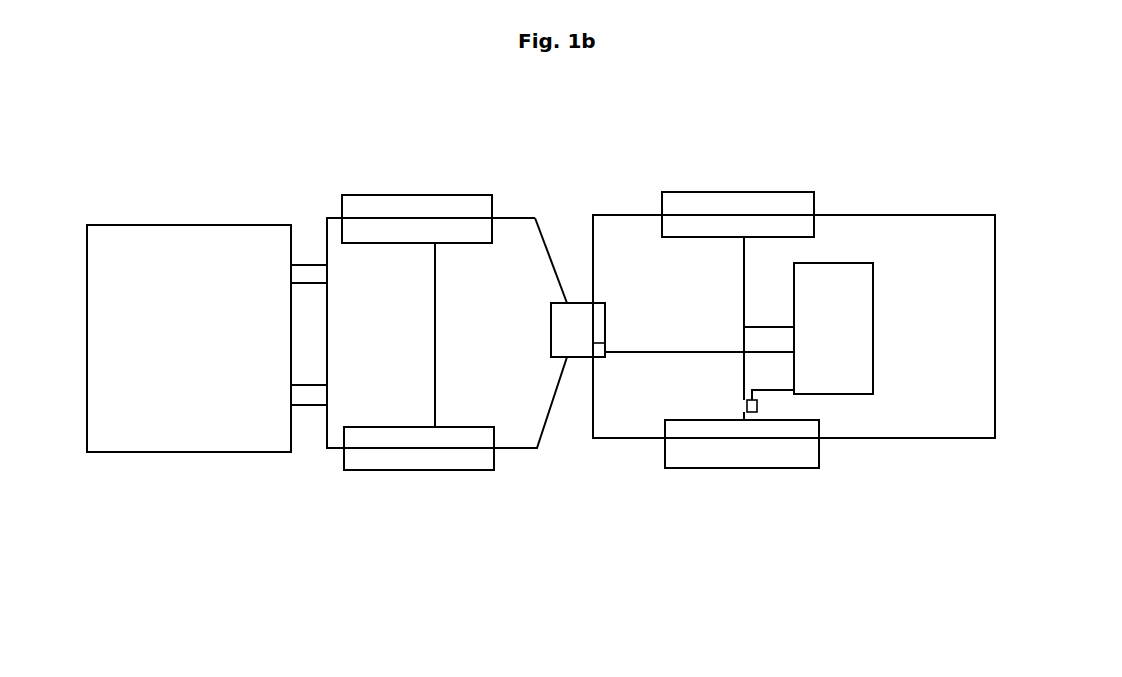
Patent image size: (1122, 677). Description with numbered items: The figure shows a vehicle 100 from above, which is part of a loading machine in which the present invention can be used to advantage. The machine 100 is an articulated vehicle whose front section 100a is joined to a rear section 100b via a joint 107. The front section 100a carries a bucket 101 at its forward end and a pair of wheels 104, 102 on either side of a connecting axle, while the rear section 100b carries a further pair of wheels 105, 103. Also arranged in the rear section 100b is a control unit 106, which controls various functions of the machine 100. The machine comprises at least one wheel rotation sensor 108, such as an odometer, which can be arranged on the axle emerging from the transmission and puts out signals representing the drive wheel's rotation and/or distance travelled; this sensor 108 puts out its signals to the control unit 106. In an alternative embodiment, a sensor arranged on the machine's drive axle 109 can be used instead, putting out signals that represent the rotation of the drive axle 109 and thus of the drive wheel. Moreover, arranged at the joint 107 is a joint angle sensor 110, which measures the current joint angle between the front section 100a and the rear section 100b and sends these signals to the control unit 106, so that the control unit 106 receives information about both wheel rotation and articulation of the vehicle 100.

The vehicle 100 is at (942, 405).
The front section 100a is at (440, 335).
The rear section 100b is at (794, 328).
The bucket 101 is at (189, 430).
The wheel 102 is at (482, 455).
The wheel 103 is at (803, 453).
The wheel 104 is at (440, 210).
The wheel 105 is at (765, 207).
The control unit 106 is at (833, 328).
The joint 107 is at (604, 365).
The wheel rotation sensor 108 is at (755, 412).
The drive axle 109 is at (743, 405).
The joint angle sensor 110 is at (597, 350).